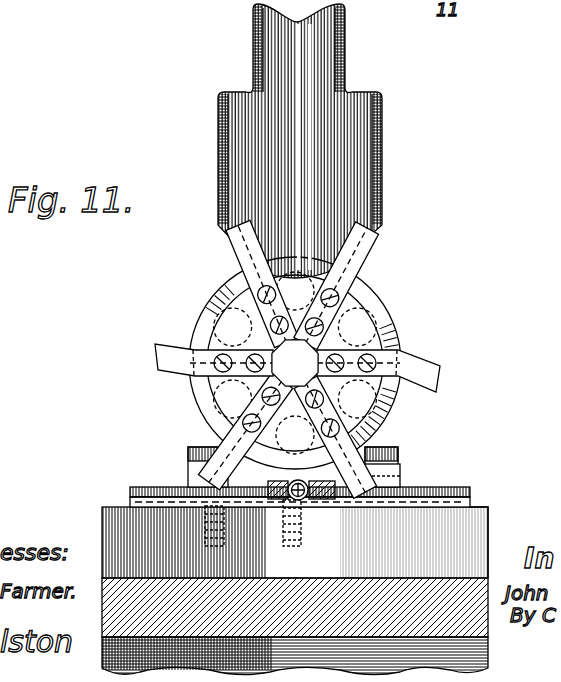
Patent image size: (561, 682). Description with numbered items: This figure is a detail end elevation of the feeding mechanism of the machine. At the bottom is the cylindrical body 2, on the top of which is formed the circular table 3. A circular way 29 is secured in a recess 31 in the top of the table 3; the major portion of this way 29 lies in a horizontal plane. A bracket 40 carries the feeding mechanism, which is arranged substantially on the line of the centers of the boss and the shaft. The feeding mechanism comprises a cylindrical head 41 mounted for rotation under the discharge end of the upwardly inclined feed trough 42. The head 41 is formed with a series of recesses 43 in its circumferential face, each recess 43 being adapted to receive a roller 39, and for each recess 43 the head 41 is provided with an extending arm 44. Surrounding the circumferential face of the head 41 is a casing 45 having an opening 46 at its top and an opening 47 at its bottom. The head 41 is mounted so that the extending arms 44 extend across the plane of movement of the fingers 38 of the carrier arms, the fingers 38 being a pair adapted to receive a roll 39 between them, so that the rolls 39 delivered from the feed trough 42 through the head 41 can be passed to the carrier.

The cylindrical body 2 is at (295, 591).
The circular table 3 is at (108, 501).
The circular way 29 is at (185, 492).
The recess 31 is at (480, 510).
The fingers 38 is at (326, 502).
The roll 39 is at (298, 500).
The bracket 40 is at (253, 418).
The cylindrical head 41 is at (404, 348).
The feed trough 42 is at (254, 130).
The recesses 43 is at (228, 396).
The extending arm 44 is at (230, 268).
The casing 45 is at (386, 436).
The opening 46 is at (275, 247).
The opening 47 is at (276, 504).